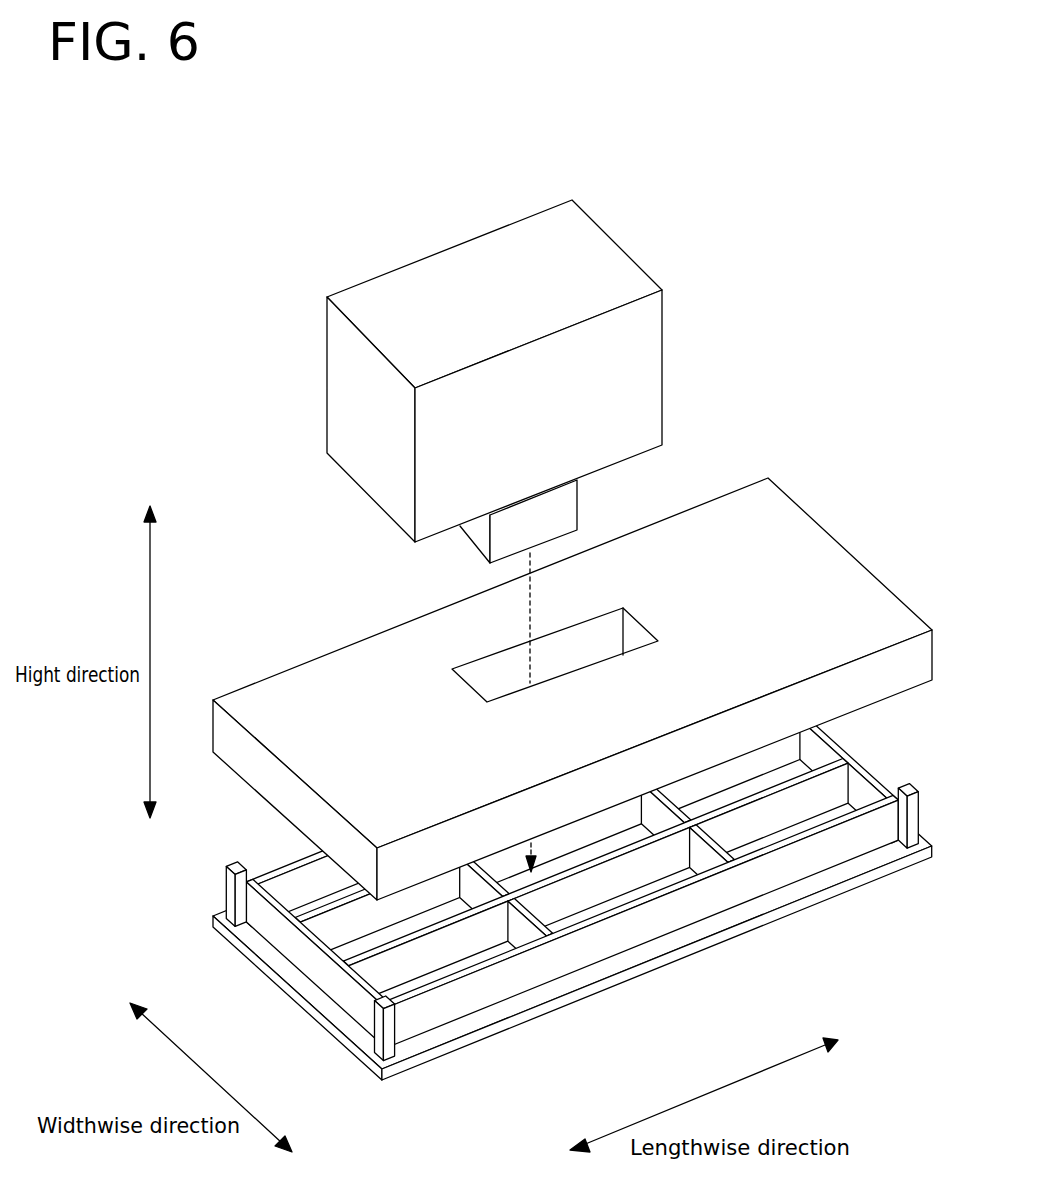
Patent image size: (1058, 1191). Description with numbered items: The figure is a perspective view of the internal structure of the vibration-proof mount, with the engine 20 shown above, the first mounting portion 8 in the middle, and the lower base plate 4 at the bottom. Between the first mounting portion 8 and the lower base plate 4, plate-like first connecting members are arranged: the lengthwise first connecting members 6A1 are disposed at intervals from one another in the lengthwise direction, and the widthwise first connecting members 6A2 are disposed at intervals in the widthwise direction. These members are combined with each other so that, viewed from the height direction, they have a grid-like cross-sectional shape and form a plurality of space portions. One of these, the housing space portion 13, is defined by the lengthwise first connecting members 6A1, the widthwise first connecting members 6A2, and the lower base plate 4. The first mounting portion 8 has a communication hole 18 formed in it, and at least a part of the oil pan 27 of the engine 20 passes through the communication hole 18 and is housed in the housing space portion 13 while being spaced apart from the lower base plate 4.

The lower base plate 4 is at (572, 896).
The lengthwise first connecting members 6A1 is at (320, 957).
The widthwise first connecting members 6A2 is at (470, 968).
The first mounting portion 8 is at (572, 689).
The housing space portion 13 is at (586, 857).
The communication hole 18 is at (578, 670).
The engine 20 is at (662, 370).
The oil pan 27 is at (460, 528).